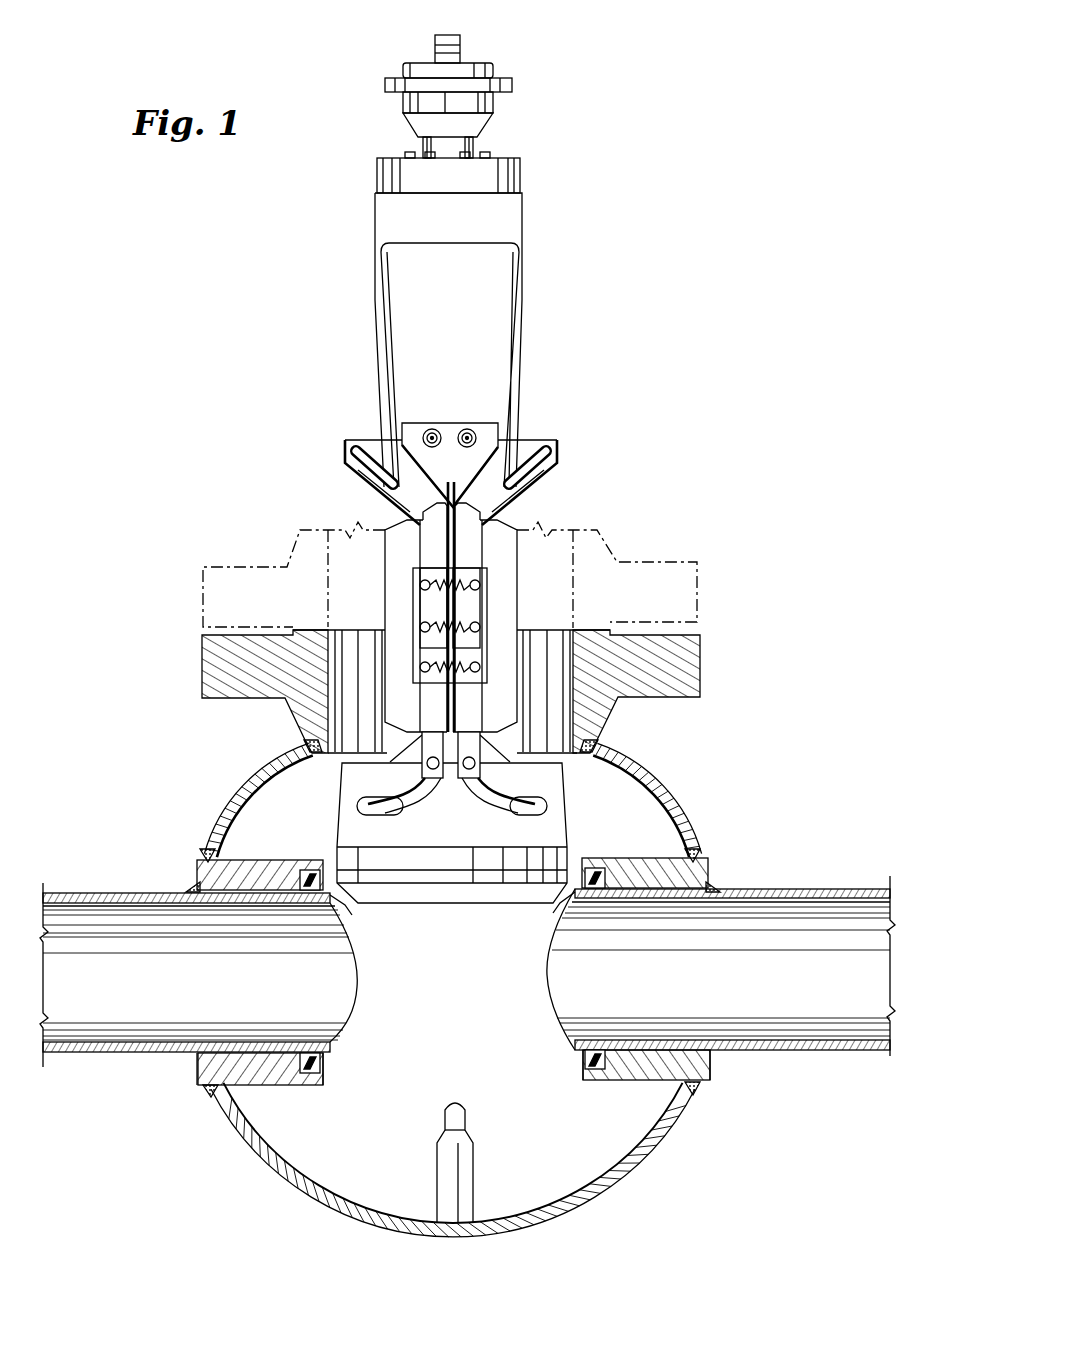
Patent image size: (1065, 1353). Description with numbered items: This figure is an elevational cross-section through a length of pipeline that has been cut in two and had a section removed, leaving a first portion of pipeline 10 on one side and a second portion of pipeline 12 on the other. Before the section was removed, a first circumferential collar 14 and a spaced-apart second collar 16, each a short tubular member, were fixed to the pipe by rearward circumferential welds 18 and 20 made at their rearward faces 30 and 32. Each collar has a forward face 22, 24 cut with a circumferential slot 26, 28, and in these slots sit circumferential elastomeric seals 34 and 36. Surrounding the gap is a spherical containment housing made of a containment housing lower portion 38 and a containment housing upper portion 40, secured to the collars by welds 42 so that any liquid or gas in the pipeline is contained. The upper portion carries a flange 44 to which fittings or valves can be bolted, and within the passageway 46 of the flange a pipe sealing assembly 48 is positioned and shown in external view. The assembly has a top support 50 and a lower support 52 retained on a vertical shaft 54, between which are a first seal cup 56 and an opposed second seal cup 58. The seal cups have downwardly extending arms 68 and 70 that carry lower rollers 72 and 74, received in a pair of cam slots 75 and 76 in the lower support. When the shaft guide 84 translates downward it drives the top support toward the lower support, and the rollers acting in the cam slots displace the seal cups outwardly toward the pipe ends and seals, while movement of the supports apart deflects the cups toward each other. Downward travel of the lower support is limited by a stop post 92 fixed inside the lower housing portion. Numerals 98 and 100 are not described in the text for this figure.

The first portion of pipeline 10 is at (88, 890).
The second portion of pipeline 12 is at (838, 889).
The first circumferential collar 14 is at (263, 1082).
The second collar 16 is at (643, 1082).
The rearward circumferential weld 18 is at (195, 886).
The rearward circumferential weld 20 is at (714, 1056).
The forward face of collar 22 is at (325, 1080).
The forward face of collar 24 is at (583, 1078).
The circumferential slot 26 is at (325, 1060).
The circumferential slot 28 is at (583, 1062).
The rearward face 30 is at (190, 1060).
The rearward face 32 is at (708, 868).
The circumferential elastomeric seal 34 is at (308, 868).
The circumferential elastomeric seal 36 is at (612, 900).
The containment housing lower portion 38 is at (303, 1188).
The containment housing upper portion 40 is at (258, 788).
The welds 42 is at (203, 855).
The flange 44 is at (213, 680).
The passageway 46 is at (558, 655).
The pipe sealing assembly 48 is at (585, 498).
The top support 50 is at (523, 440).
The lower support 52 is at (548, 825).
The vertical shaft 54 is at (437, 45).
The first seal cup 56 is at (398, 570).
The second seal cup 58 is at (505, 556).
The downwardly extending arms 68 is at (432, 750).
The downwardly extending arms 70 is at (472, 750).
The lower roller 72 is at (436, 778).
The lower roller 74 is at (468, 778).
The cam slot 75 is at (362, 808).
The cam slot 76 is at (542, 808).
The shaft guide 84 is at (490, 110).
The stop post 92 is at (450, 1172).
The seat 98 is at (355, 907).
The seat 100 is at (548, 906).